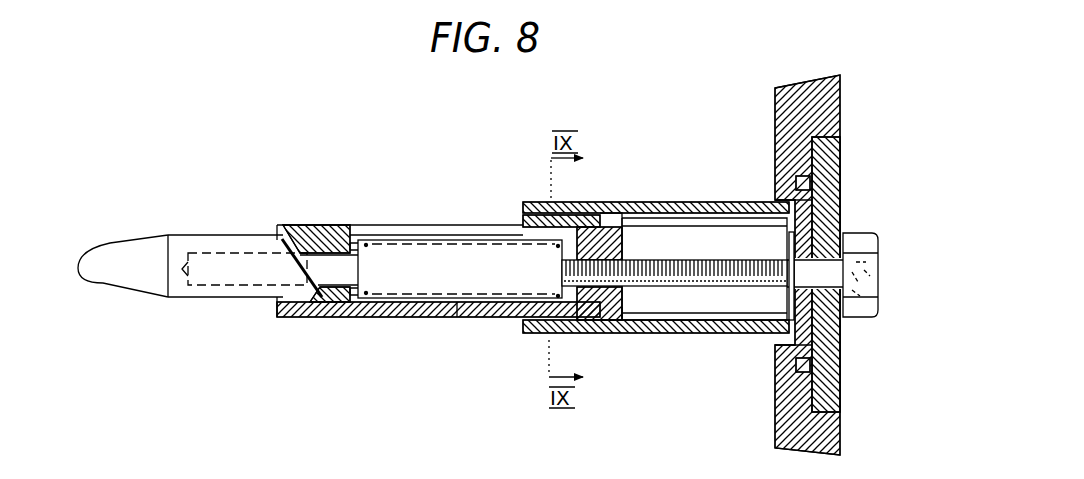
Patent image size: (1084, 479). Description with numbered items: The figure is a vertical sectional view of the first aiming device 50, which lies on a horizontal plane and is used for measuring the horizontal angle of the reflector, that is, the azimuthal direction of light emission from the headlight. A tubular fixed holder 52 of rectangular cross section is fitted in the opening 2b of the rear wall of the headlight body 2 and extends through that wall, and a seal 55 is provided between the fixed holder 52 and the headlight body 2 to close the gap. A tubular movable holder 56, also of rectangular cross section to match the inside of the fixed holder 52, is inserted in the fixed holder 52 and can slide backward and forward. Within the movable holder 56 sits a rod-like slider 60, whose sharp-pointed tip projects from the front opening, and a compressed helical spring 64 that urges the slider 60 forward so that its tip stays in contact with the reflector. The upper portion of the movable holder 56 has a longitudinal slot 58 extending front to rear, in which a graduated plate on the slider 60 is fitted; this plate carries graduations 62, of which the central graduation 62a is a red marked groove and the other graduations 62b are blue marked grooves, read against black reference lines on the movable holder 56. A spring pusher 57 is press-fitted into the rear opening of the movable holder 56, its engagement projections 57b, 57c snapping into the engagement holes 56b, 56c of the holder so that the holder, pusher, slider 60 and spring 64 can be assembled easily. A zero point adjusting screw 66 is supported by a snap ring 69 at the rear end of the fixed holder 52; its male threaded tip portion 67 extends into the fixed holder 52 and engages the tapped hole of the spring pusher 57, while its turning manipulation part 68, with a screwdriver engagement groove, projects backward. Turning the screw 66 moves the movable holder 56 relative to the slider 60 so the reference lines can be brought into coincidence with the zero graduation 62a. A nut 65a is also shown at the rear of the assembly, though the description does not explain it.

The headlight body 2 is at (836, 240).
The opening of the rear wall 2b is at (840, 205).
The first aiming device 50 is at (505, 198).
The fixed holder 52 is at (655, 203).
The seal 55 is at (812, 182).
The movable holder 56 is at (472, 225).
The engagement hole 56b is at (600, 215).
The engagement hole 56c is at (592, 332).
The spring pusher 57 is at (652, 258).
The engagement projection 57b is at (607, 224).
The engagement projection 57c is at (610, 332).
The longitudinal slot 58 is at (405, 240).
The slider 60 is at (189, 226).
The graduations 62 is at (318, 205).
The central graduation 62a is at (322, 228).
The other graduations 62b is at (393, 150).
The compressed helical spring 64 is at (455, 320).
The nut 65a is at (855, 282).
The zero point adjusting screw 66 is at (733, 295).
The male threaded tip portion 67 is at (665, 332).
The turning manipulation part 68 is at (845, 274).
The snap ring 69 is at (790, 235).